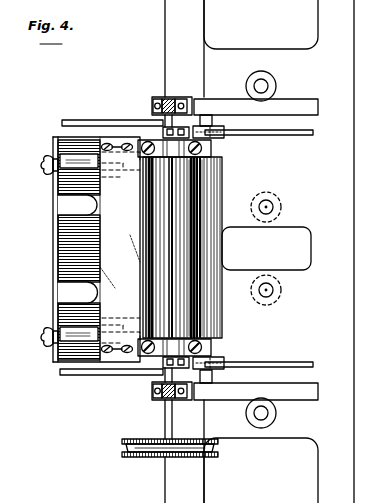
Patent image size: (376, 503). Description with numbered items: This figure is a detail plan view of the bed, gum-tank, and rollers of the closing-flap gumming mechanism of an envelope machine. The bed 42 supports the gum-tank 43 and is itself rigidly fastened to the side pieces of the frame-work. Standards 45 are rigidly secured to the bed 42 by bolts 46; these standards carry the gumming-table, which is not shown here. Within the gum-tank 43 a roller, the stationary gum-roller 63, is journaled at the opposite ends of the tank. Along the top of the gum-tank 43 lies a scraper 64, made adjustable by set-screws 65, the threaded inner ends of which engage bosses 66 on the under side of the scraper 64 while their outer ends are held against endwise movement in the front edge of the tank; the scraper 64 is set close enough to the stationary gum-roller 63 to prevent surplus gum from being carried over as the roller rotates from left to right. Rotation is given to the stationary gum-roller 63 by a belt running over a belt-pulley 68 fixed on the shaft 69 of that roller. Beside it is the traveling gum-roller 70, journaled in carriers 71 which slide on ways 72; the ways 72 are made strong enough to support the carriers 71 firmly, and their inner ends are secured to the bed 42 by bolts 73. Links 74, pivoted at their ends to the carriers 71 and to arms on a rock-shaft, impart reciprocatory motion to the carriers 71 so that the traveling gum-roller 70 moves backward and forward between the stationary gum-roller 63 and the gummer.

The bed 42 is at (279, 251).
The gum-tank 43 is at (55, 262).
The standards 45 is at (171, 97).
The bolts 46 is at (153, 100).
The stationary gum-roller 63 is at (180, 248).
The scraper 64 is at (96, 249).
The set-screws 65 is at (45, 170).
The bosses 66 is at (118, 168).
The belt-pulley 68 is at (152, 458).
The shaft 69 is at (165, 428).
The traveling gum-roller 70 is at (202, 248).
The carriers 71 is at (218, 360).
The ways 72 is at (297, 135).
The bolts 73 is at (163, 130).
The links 74 is at (77, 125).